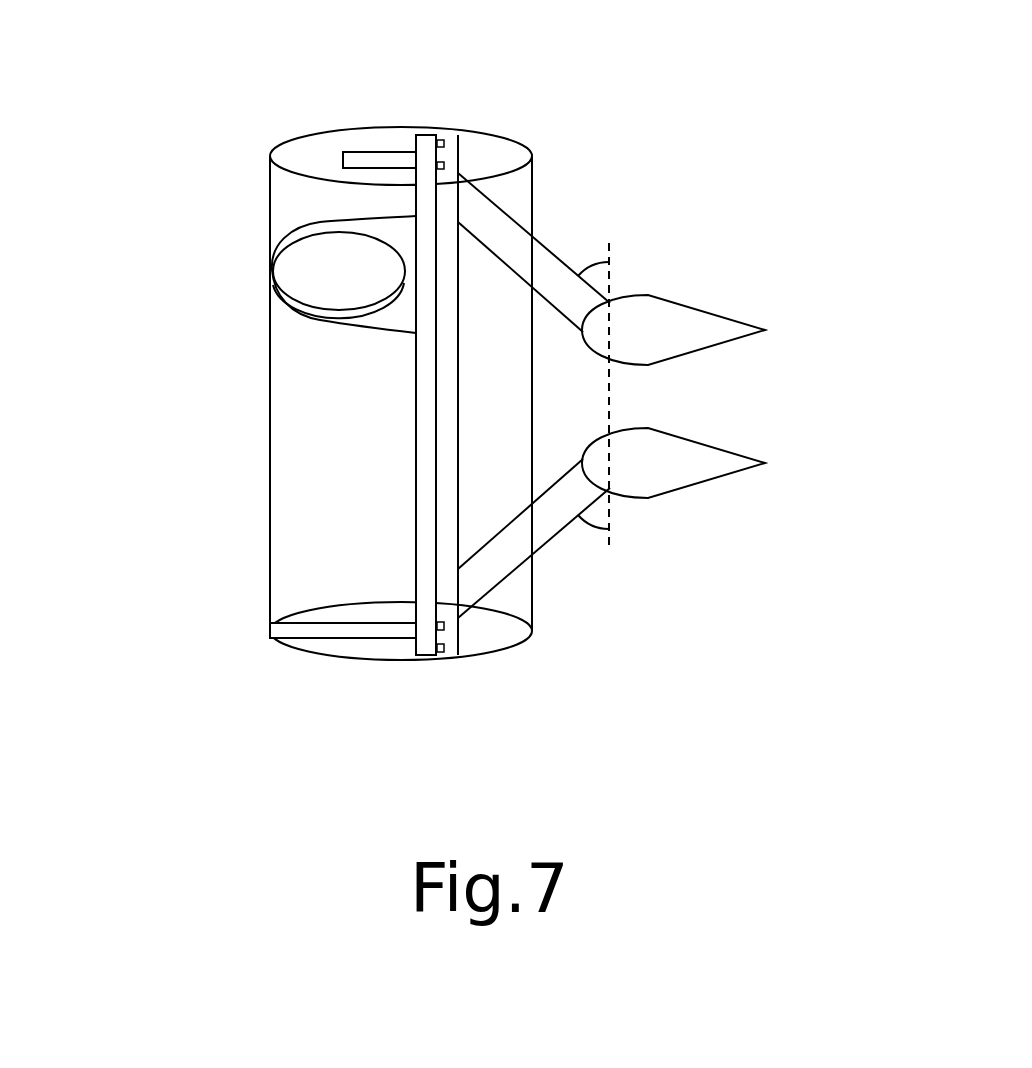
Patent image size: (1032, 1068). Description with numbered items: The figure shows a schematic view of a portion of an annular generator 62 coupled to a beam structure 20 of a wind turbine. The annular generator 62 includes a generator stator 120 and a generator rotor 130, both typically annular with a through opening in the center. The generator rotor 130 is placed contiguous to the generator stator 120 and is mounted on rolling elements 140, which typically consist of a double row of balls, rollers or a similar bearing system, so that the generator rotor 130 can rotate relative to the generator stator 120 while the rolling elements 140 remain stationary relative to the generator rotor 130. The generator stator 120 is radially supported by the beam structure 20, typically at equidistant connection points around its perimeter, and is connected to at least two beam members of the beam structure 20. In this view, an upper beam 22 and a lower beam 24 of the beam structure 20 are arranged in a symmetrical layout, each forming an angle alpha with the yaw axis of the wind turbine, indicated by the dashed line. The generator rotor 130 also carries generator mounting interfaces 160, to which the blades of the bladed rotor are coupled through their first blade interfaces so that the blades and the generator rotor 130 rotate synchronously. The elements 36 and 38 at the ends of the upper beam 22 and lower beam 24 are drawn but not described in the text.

The beam structure 20 is at (633, 577).
The upper beam 22 is at (545, 240).
The lower beam 24 is at (533, 555).
The first lens 36 is at (765, 330).
The second lens 38 is at (765, 463).
The annular generator 62 is at (198, 430).
The generator stator 120 is at (447, 275).
The generator rotor 130 is at (387, 160).
The rolling elements 140 is at (444, 163).
The generator mounting interfaces 160 is at (325, 228).